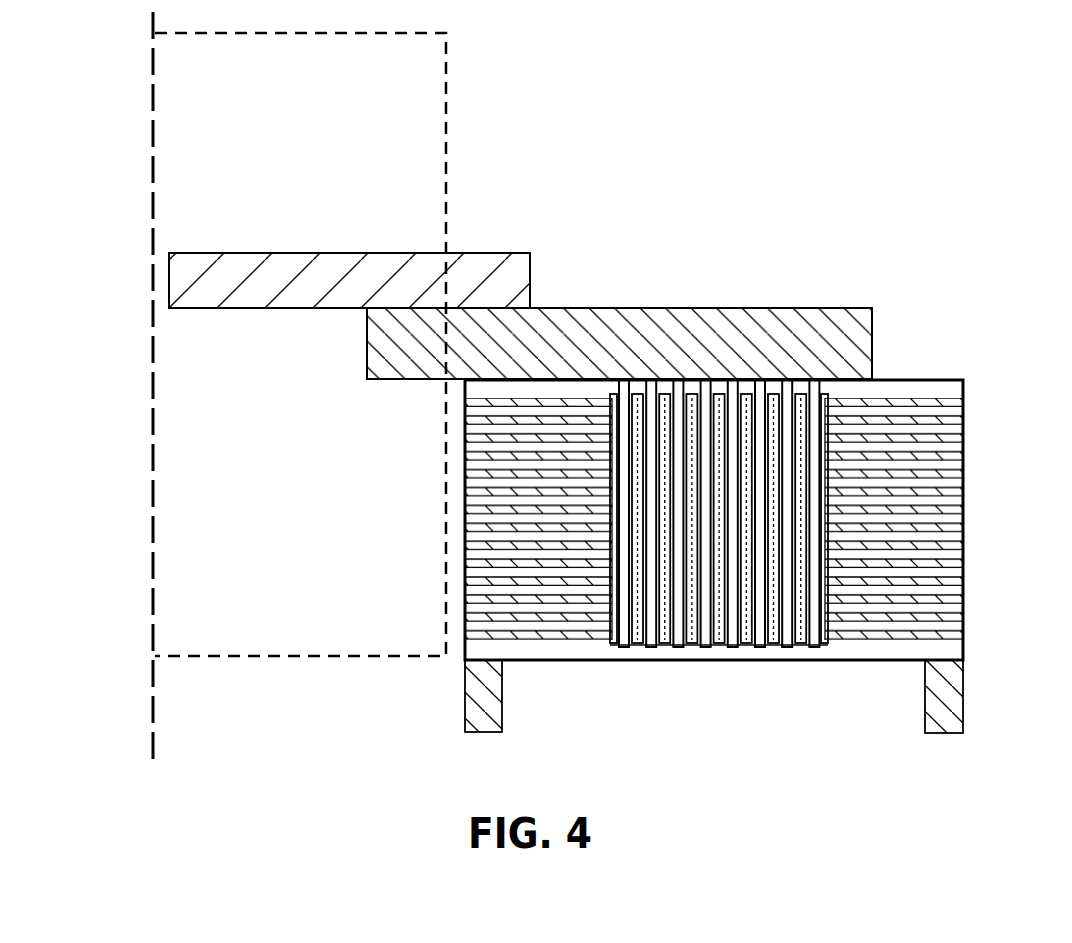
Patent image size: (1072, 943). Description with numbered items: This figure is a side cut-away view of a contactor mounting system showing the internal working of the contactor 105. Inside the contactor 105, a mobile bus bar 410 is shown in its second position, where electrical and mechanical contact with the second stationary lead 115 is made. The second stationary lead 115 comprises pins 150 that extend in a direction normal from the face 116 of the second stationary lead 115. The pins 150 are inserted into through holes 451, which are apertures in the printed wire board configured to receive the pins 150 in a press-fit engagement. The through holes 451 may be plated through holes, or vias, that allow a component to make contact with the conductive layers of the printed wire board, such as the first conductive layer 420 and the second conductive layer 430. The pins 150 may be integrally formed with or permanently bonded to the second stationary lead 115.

The contactor 105 is at (423, 82).
The second stationary lead 115 is at (790, 317).
The face 116 is at (624, 379).
The pins 150 is at (808, 427).
The mobile bus bar 410 is at (508, 277).
The first conductive layer 420 is at (935, 515).
The second conductive layer 430 is at (937, 462).
The through holes 451 is at (823, 645).